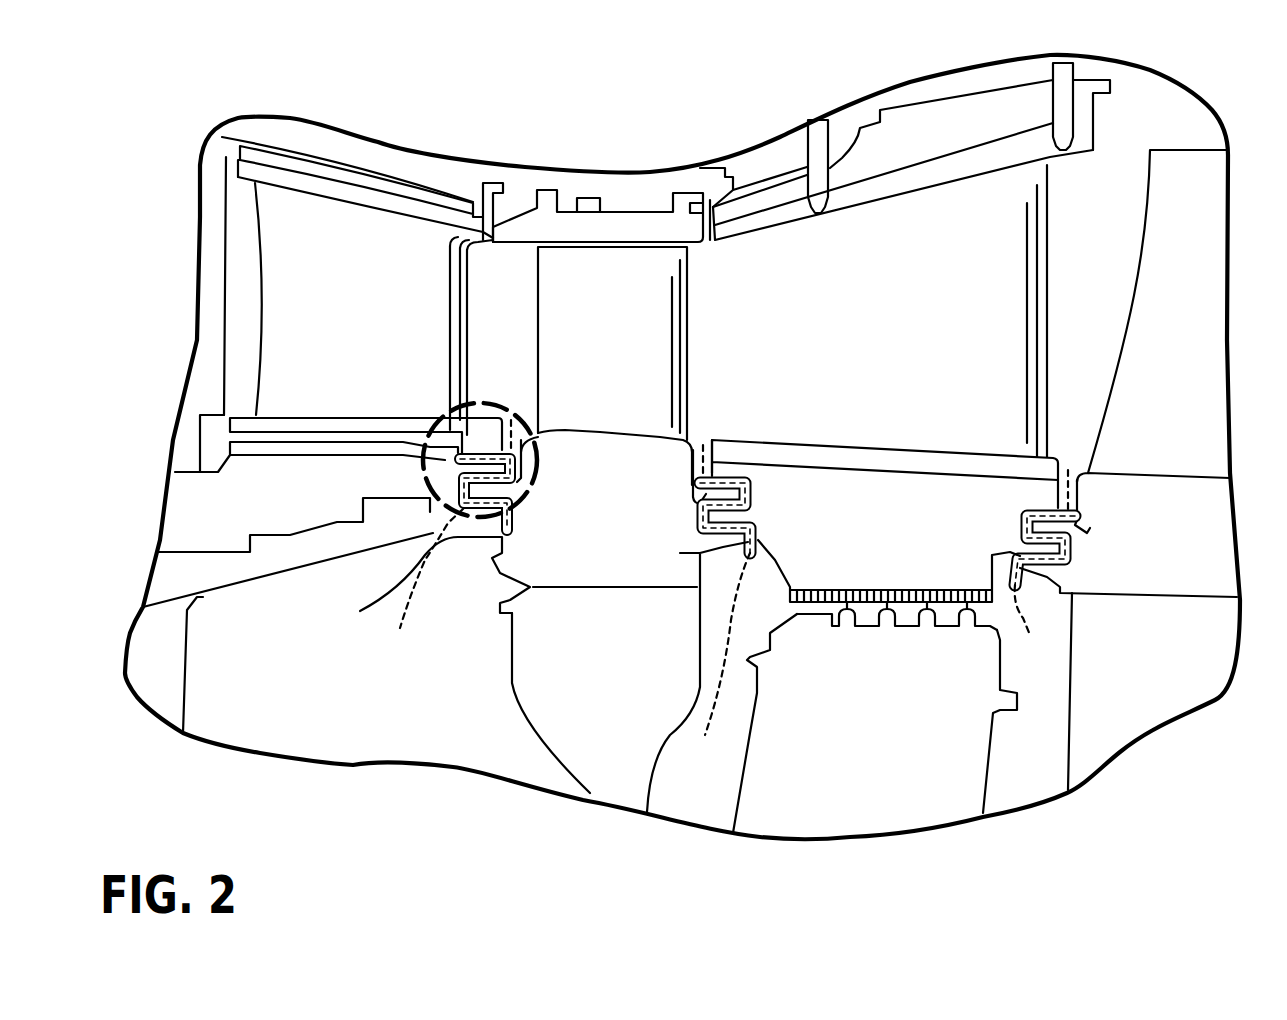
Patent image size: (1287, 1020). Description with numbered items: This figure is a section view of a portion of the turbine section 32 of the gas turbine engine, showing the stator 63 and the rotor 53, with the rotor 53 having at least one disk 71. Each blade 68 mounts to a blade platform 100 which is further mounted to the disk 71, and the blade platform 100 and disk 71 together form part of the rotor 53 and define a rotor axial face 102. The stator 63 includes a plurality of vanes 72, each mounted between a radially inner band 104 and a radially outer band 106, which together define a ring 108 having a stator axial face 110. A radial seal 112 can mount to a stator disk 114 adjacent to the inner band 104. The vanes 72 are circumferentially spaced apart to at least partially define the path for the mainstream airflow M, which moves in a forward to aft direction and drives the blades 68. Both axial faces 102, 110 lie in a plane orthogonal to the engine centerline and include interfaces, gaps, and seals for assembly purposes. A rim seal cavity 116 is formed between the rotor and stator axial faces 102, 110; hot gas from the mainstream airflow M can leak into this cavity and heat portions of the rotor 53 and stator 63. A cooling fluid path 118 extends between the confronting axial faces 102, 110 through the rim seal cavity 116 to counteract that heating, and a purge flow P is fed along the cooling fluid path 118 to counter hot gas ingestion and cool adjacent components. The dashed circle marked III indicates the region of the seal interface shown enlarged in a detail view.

The turbine section 32 is at (990, 28).
The rotor 53 is at (592, 715).
The stator 63 is at (250, 500).
The blade 68 is at (620, 347).
The disk 71 is at (606, 667).
The vane 72 is at (364, 342).
The blade platform 100 is at (588, 500).
The rotor axial face 102 is at (697, 583).
The radially inner band 104 is at (285, 506).
The radially outer band 106 is at (373, 200).
The ring 108 is at (457, 213).
The stator axial face 110 is at (458, 477).
The radial seal 112 is at (938, 612).
The stator disk 114 is at (861, 734).
The rim seal cavity 116 is at (514, 398).
The cooling fluid path 118 is at (715, 636).
The mainstream airflow M is at (285, 390).
The purge flow P is at (453, 557).
The detail view circle III is at (437, 513).